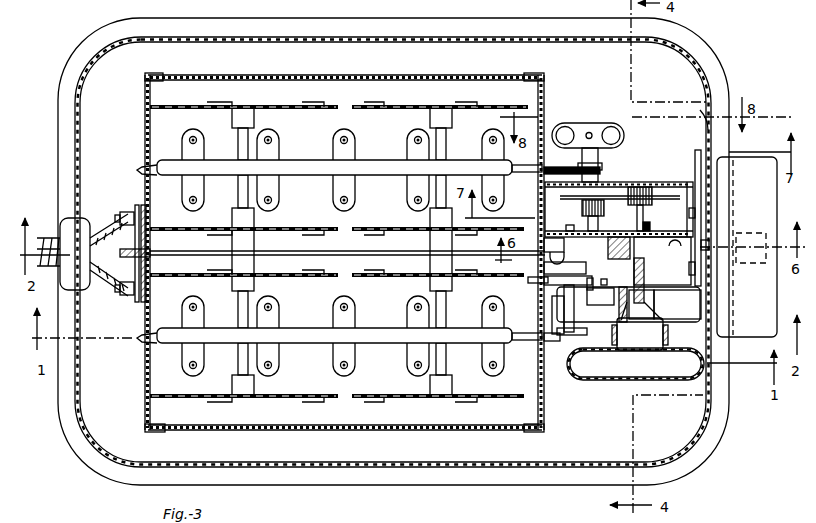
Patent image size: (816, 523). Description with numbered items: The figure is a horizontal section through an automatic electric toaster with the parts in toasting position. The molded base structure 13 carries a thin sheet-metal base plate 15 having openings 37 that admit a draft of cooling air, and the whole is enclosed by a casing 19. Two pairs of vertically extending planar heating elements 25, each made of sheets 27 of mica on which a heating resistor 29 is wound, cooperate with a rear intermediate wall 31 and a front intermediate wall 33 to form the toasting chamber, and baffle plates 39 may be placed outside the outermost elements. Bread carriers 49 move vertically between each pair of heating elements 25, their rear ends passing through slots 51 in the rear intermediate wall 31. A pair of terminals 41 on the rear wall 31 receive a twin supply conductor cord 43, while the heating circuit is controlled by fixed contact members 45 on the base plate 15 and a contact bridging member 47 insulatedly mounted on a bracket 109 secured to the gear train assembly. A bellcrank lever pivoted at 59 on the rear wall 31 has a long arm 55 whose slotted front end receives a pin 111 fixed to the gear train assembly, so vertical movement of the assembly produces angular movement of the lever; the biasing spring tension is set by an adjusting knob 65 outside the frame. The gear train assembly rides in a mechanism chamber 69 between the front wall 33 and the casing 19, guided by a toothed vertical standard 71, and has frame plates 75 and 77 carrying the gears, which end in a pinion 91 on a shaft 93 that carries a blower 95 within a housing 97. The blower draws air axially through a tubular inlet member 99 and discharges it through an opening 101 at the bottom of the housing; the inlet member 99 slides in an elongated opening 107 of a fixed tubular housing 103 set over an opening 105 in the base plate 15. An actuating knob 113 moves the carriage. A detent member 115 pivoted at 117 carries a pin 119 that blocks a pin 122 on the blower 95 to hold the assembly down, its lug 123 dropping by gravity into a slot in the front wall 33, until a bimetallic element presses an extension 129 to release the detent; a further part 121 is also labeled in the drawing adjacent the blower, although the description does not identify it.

The base structure 13 is at (455, 476).
The base plate 15 is at (501, 453).
The casing 19 is at (100, 447).
The heating elements 25 is at (287, 108).
The sheets of electric insulating material 27 is at (406, 106).
The heating resistor 29 is at (412, 103).
The rear intermediate wall 31 is at (148, 116).
The front intermediate wall 33 is at (546, 88).
The openings 37 is at (157, 134).
The baffle plates 39 is at (396, 76).
The terminals 41 is at (120, 217).
The twin supply conductor cord 43 is at (52, 236).
The contact members 45 is at (560, 124).
The contact bridging member 47 is at (581, 128).
The bread carriers 49 is at (375, 163).
The slots 51 is at (143, 166).
The long arm 55 is at (381, 254).
The pivot 59 is at (138, 303).
The adjusting knob 65 is at (752, 236).
The mechanism chamber 69 is at (677, 126).
The vertical standard 71 is at (607, 230).
The frame plate 75 is at (679, 182).
The frame plate 77 is at (651, 231).
The pinion 91 is at (655, 186).
The shaft 93 is at (652, 278).
The blower 95 is at (690, 311).
The housing 97 is at (702, 289).
The tubular inlet member 99 is at (622, 348).
The opening 101 is at (566, 312).
The tubular housing 103 is at (612, 381).
The opening 105 is at (572, 366).
The elongated opening 107 is at (668, 348).
The bracket 109 is at (603, 175).
The pin 111 is at (536, 246).
The actuating knob 113 is at (750, 158).
The detent member 115 is at (548, 306).
The pivot 117 is at (549, 283).
The pin 119 is at (601, 278).
The piston 121 is at (682, 299).
The pin 122 is at (606, 285).
The lug 123 is at (528, 280).
The extension 129 is at (602, 300).